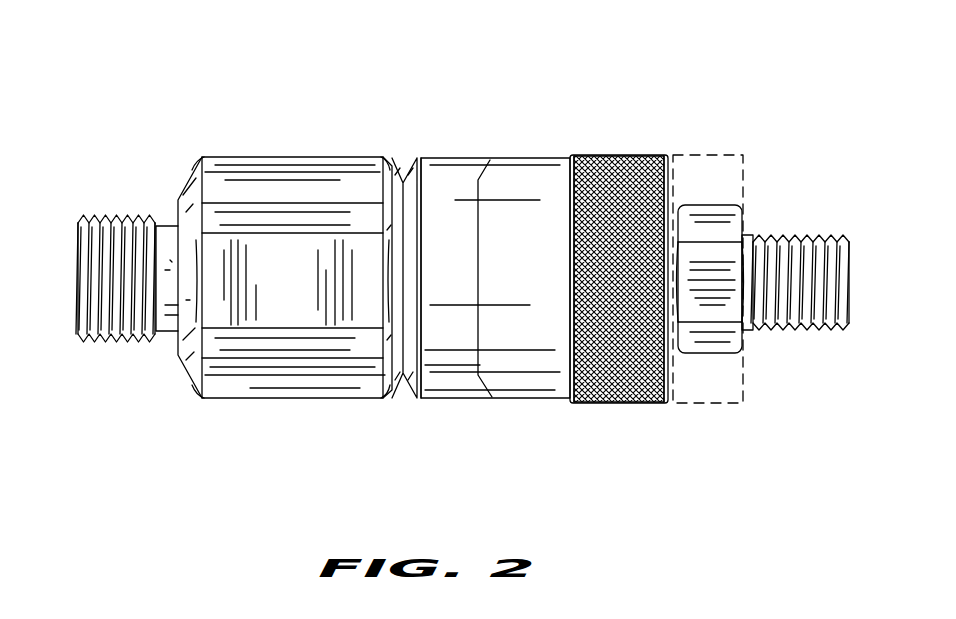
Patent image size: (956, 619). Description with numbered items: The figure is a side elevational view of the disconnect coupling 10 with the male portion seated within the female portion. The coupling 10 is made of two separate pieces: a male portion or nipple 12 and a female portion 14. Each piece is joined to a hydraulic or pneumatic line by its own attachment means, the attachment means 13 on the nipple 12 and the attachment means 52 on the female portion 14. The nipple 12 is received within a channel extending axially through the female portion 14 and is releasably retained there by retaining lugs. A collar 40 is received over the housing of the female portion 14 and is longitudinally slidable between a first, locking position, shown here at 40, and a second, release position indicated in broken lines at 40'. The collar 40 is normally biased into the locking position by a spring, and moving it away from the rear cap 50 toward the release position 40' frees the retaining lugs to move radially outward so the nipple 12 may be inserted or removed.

The disconnect coupling 10 is at (500, 90).
The nipple 12 is at (716, 372).
The attachment means 13 is at (800, 232).
The female portion 14 is at (318, 398).
The collar 40 is at (530, 245).
The collar release position 40' is at (750, 254).
The rear cap 50 is at (272, 157).
The attachment means 52 is at (122, 218).